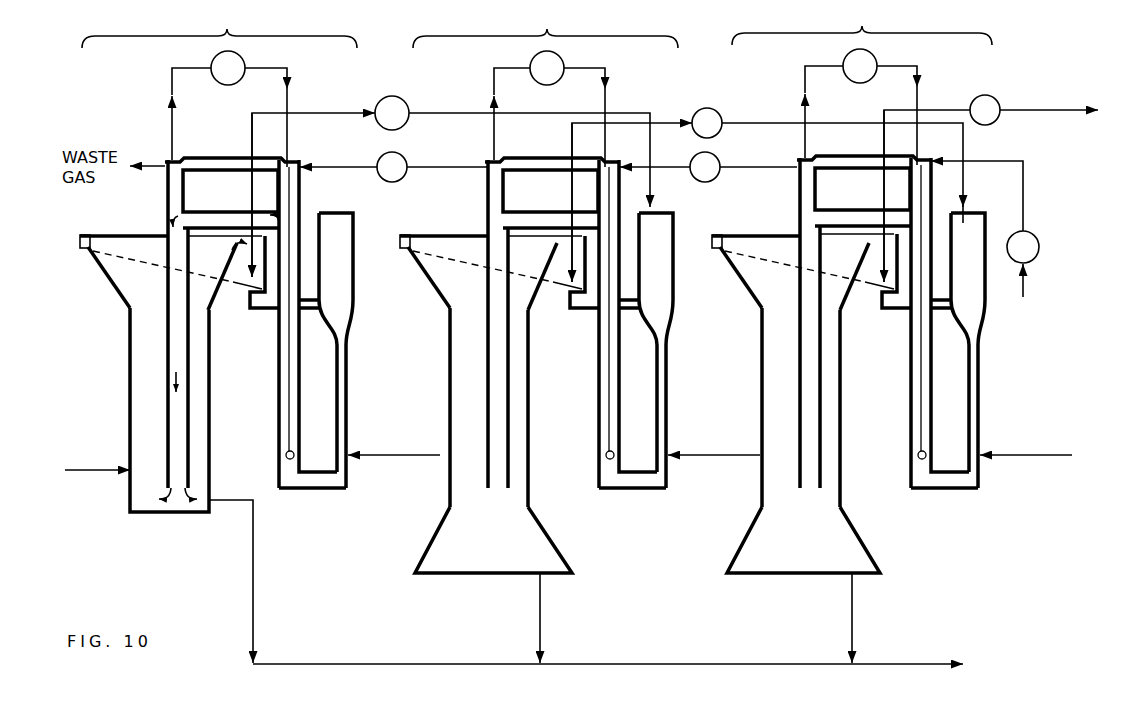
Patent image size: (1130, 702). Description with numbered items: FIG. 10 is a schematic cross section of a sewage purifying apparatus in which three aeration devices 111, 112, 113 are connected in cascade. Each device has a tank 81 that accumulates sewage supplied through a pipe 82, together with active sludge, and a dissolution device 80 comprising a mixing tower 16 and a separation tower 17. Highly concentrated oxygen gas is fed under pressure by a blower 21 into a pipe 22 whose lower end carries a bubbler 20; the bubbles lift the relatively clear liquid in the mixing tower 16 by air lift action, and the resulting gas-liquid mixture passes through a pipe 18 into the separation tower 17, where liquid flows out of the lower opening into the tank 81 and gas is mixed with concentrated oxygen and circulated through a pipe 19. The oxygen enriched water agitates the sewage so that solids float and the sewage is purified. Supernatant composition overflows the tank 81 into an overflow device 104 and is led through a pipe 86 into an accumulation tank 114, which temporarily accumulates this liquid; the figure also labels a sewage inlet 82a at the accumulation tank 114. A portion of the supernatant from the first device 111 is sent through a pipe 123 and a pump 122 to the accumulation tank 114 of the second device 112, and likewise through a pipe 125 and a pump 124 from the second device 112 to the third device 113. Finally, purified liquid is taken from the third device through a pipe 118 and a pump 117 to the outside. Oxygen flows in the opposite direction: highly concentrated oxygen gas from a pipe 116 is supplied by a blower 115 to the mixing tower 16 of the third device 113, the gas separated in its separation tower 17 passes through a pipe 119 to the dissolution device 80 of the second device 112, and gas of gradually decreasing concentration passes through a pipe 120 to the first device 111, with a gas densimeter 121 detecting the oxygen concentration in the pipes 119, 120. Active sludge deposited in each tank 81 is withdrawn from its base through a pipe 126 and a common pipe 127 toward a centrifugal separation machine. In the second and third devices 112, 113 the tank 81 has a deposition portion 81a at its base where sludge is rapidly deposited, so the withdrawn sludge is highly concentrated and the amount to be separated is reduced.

The aeration device 111 is at (219, 27).
The aeration device 112 is at (545, 27).
The aeration device 113 is at (862, 24).
The blower 21 is at (243, 60).
The pipe 19 is at (228, 162).
The dissolution device 80 is at (162, 219).
The pipe 18 is at (236, 208).
The separation tower 17 is at (192, 363).
The mixing tower 16 is at (277, 369).
The pipe 22 is at (288, 392).
The bubbler 20 is at (286, 458).
The accumulation tank 114 is at (355, 303).
The overflow device 104 is at (80, 236).
The pipe 86 is at (270, 312).
The tank 81 is at (449, 416).
The deposition portion 81a is at (545, 540).
The pipe 126 is at (253, 626).
The pipe 127 is at (708, 660).
The pump 122 is at (406, 101).
The pipe 123 is at (468, 111).
The pump 124 is at (724, 112).
The pipe 125 is at (784, 120).
The pump 117 is at (955, 100).
The pipe 118 is at (974, 98).
The gas densimeter 121 is at (383, 180).
The pipe 120 is at (462, 163).
The pipe 119 is at (780, 163).
The blower 115 is at (1036, 246).
The pipe 116 is at (1030, 289).
The pipe 82 is at (100, 478).
The sewage inlet to settling tube 82a is at (710, 457).